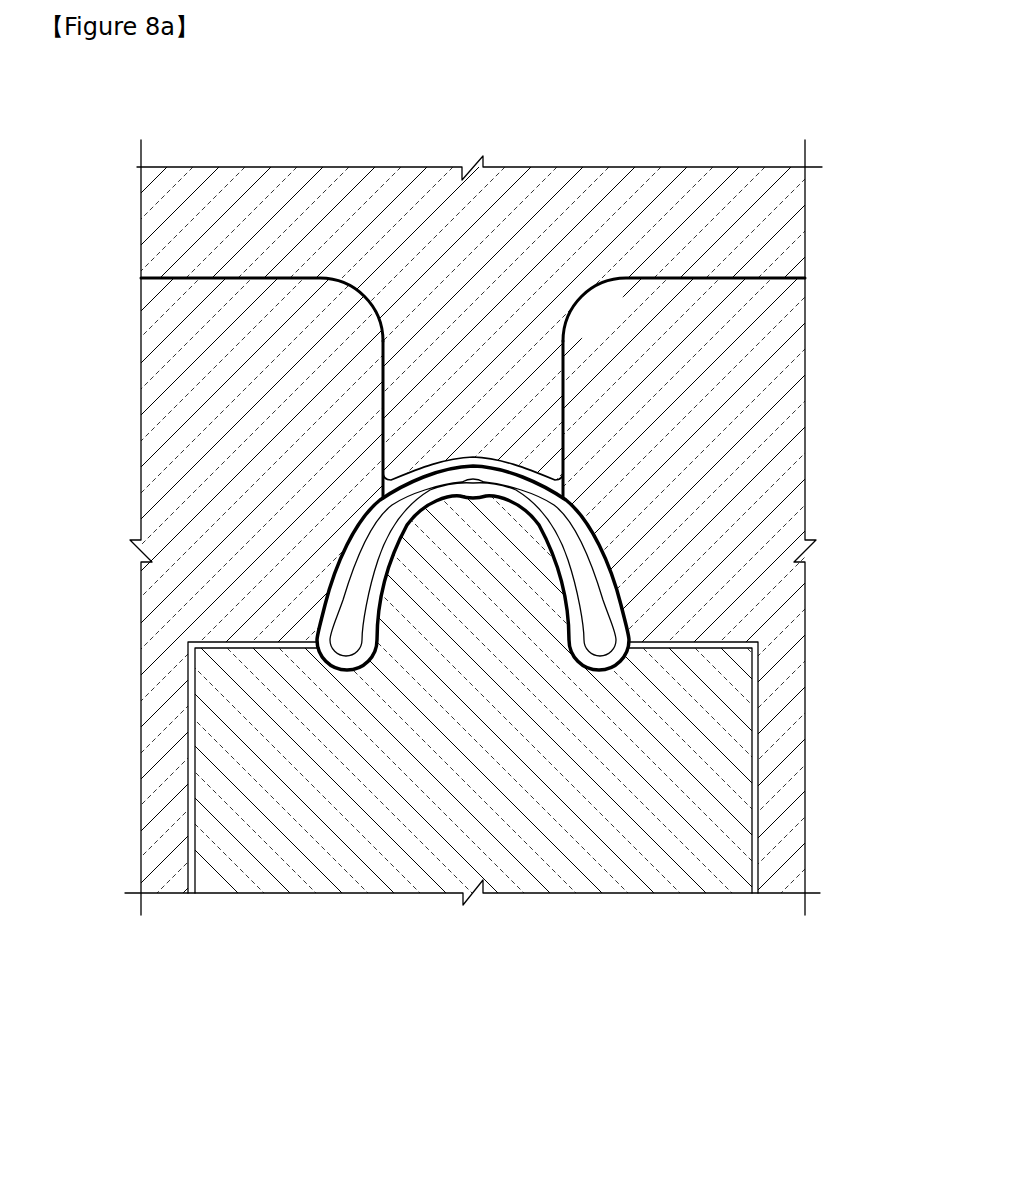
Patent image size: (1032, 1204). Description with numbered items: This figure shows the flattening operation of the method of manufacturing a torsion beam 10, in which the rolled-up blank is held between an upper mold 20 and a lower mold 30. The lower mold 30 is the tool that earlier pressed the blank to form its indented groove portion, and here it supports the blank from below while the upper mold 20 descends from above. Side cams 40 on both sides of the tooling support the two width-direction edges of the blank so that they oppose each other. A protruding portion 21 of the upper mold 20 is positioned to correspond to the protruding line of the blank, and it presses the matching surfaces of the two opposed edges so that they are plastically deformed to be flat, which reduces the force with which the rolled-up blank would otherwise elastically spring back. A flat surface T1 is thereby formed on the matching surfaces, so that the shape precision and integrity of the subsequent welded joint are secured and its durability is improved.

The torsion beam 10 is at (566, 492).
The upper mold 20 is at (566, 160).
The protruding portion of the upper mold 21 is at (472, 456).
The lower mold 30 is at (566, 904).
The side cams 40 is at (139, 364).
The flat surface T1 is at (487, 462).